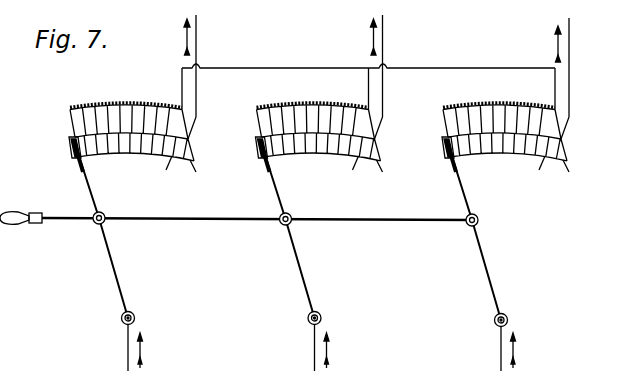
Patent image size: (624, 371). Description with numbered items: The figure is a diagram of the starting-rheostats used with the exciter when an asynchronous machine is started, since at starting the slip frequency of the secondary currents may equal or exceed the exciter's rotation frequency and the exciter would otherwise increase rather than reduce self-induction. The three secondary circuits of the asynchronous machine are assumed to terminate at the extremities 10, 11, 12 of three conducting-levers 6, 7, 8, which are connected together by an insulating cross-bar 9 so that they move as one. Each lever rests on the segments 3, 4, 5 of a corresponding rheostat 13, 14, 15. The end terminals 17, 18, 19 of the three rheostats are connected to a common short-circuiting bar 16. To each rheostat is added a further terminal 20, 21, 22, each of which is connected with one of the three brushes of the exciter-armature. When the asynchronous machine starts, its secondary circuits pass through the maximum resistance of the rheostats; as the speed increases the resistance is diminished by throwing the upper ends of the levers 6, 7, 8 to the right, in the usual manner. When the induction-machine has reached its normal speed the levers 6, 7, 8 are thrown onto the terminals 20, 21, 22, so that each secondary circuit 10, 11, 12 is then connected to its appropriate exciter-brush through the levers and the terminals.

The segment 3 is at (131, 153).
The segment 4 is at (318, 154).
The segment 5 is at (504, 154).
The conducting-lever 6 is at (103, 230).
The conducting-lever 7 is at (290, 230).
The conducting-lever 8 is at (476, 231).
The insulating cross-bar 9 is at (236, 229).
The extremity of conducting-lever 10 is at (119, 339).
The extremity of conducting-lever 11 is at (306, 342).
The extremity of conducting-lever 12 is at (492, 341).
The rheostat 13 is at (129, 110).
The rheostat 14 is at (316, 110).
The rheostat 15 is at (502, 110).
The short-circuiting bar 16 is at (368, 78).
The end terminal 17 is at (165, 171).
The end terminal 18 is at (352, 169).
The end terminal 19 is at (538, 172).
The terminal 20 is at (201, 100).
The terminal 21 is at (388, 101).
The terminal 22 is at (573, 102).